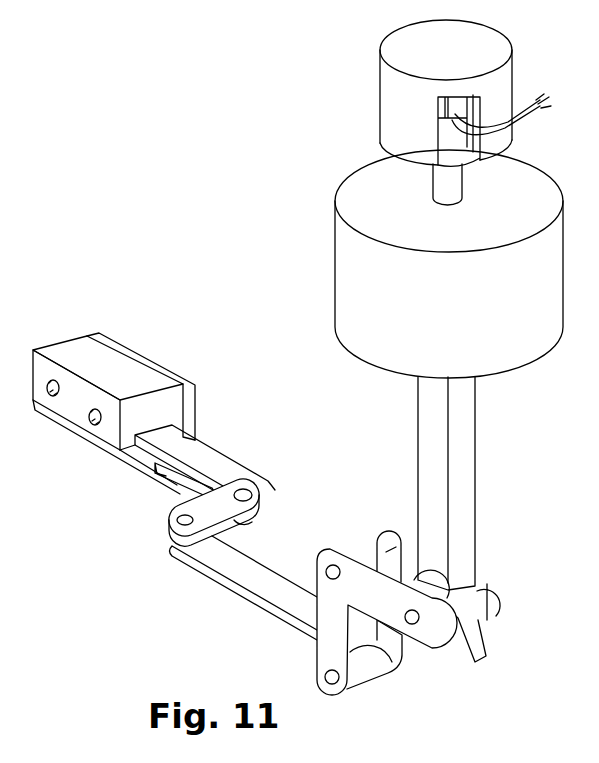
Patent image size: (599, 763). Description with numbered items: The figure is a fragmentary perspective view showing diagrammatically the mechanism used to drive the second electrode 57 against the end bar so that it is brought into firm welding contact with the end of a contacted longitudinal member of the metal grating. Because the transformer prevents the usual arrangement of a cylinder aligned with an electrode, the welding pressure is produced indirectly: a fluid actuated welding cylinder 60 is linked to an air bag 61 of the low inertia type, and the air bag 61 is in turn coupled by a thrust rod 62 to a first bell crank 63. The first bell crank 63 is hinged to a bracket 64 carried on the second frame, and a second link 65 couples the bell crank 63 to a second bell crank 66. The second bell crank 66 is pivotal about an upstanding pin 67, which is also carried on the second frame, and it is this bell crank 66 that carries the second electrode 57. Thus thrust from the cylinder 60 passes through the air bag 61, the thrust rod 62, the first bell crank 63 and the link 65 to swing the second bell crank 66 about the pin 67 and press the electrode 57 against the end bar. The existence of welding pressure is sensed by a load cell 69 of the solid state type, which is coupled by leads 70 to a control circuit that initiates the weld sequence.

The second electrode 57 is at (155, 367).
The fluid actuated welding cylinder 60 is at (490, 43).
The air bag 61 is at (507, 358).
The thrust rod 62 is at (465, 503).
The first bell crank 63 is at (357, 550).
The bracket 64 is at (462, 642).
The second link 65 is at (243, 593).
The second bell crank 66 is at (213, 458).
The upstanding pin 67 is at (247, 492).
The load cell 69 is at (457, 107).
The leads 70 is at (527, 124).